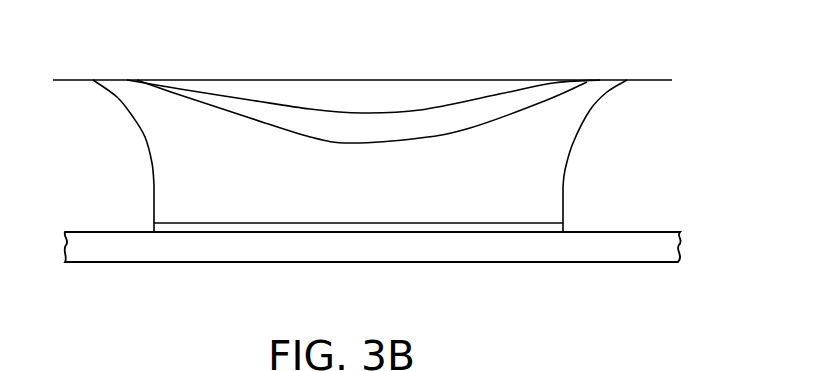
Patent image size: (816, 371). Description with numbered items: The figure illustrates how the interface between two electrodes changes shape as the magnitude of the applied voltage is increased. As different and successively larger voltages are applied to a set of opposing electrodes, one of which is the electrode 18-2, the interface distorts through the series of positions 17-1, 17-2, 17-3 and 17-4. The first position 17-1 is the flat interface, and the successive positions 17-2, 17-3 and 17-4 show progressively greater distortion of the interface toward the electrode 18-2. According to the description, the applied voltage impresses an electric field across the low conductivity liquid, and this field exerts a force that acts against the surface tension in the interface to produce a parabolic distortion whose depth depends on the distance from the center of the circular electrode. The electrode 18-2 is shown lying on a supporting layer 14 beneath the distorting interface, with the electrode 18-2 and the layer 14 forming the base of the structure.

The interface in first position 17-1 is at (447, 80).
The interface in second position 17-2 is at (495, 95).
The interface in third position 17-3 is at (547, 100).
The interface in fourth position 17-4 is at (603, 92).
The opposing electrode 18-2 is at (550, 227).
The substrate 14 is at (660, 240).